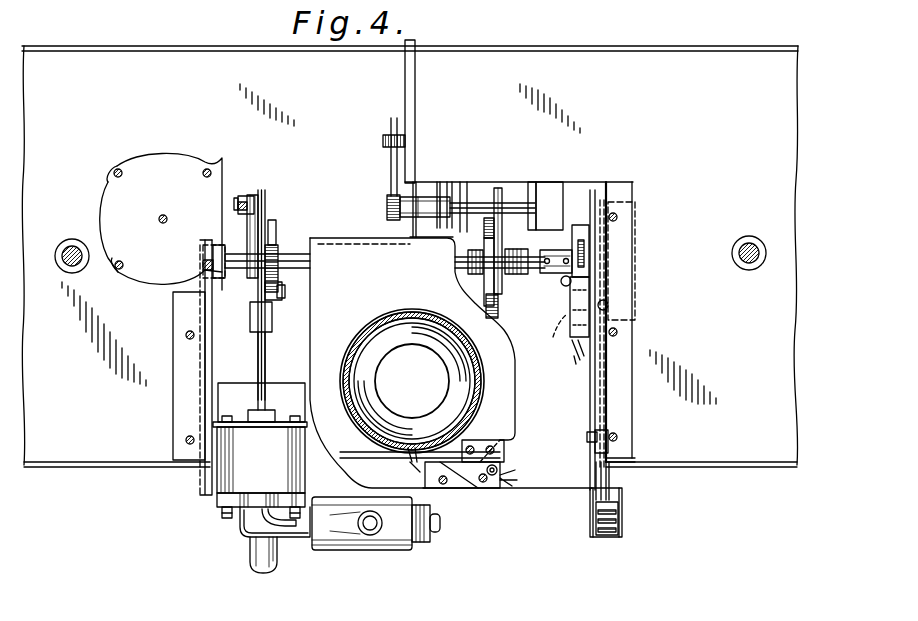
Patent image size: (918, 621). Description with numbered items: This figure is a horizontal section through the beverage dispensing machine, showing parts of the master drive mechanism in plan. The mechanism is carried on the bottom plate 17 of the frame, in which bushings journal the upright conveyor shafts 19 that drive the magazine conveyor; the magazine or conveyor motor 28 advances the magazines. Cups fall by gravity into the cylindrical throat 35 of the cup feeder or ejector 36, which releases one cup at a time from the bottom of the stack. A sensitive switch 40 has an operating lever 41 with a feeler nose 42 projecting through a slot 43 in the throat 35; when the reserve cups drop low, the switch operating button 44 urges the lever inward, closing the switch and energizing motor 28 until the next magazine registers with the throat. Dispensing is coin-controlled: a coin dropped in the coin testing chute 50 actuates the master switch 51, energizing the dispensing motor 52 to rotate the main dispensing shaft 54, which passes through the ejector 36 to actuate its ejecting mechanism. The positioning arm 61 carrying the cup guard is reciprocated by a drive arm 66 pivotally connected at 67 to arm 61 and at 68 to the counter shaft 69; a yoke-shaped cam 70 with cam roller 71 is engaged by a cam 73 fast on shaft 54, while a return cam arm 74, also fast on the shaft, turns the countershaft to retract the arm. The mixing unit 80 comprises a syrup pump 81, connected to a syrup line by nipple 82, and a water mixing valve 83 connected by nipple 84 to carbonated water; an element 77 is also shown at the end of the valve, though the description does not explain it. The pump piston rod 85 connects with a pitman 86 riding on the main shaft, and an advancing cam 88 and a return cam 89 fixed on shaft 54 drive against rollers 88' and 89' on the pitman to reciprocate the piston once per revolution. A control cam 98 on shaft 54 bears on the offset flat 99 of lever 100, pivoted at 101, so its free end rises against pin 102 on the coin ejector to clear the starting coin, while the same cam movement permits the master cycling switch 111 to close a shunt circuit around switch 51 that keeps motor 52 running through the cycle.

The bottom plate 17 is at (752, 458).
The upright conveyor shafts 19 is at (72, 246).
The magazine or conveyor motor 28 is at (170, 160).
The cylindrical throat 35 is at (408, 338).
The cup feeder or ejector 36 is at (388, 297).
The sensitive switch 40 is at (478, 480).
The operating lever 41 is at (414, 464).
The feeler nose 42 is at (408, 456).
The slot 43 is at (372, 452).
The switch operating button 44 is at (450, 486).
The coin testing chute 50 is at (628, 510).
The master switch 51 is at (617, 522).
The dispensing motor 52 is at (634, 308).
The main dispensing shaft 54 is at (292, 262).
The positioning arm 61 is at (415, 112).
The drive arm 66 is at (391, 160).
The pivotal connection 67 is at (386, 136).
The pivotal connection 68 is at (396, 206).
The counter shaft 69 is at (482, 200).
The yoke-shaped cam 70 is at (500, 288).
The cam roller 71 is at (492, 300).
The cam 73 is at (496, 314).
The return cam arm 74 is at (516, 249).
The knob 77 is at (438, 527).
The mixing unit 80 is at (316, 557).
The syrup pump 81 is at (268, 456).
The nipple 82 is at (250, 556).
The water mixing valve 83 is at (350, 548).
The nipple 84 is at (358, 522).
The piston rod 85 is at (258, 349).
The pitman 86 is at (260, 290).
The advancing cam 88 is at (296, 244).
The roller 88' is at (280, 316).
The return cam 89 is at (219, 236).
The roller 89' is at (248, 181).
The control cam 98 is at (578, 228).
The offset flat 99 is at (560, 238).
The lever 100 is at (590, 382).
The pivot 101 is at (556, 340).
The pin 102 is at (586, 440).
The master cycling switch 111 is at (572, 306).